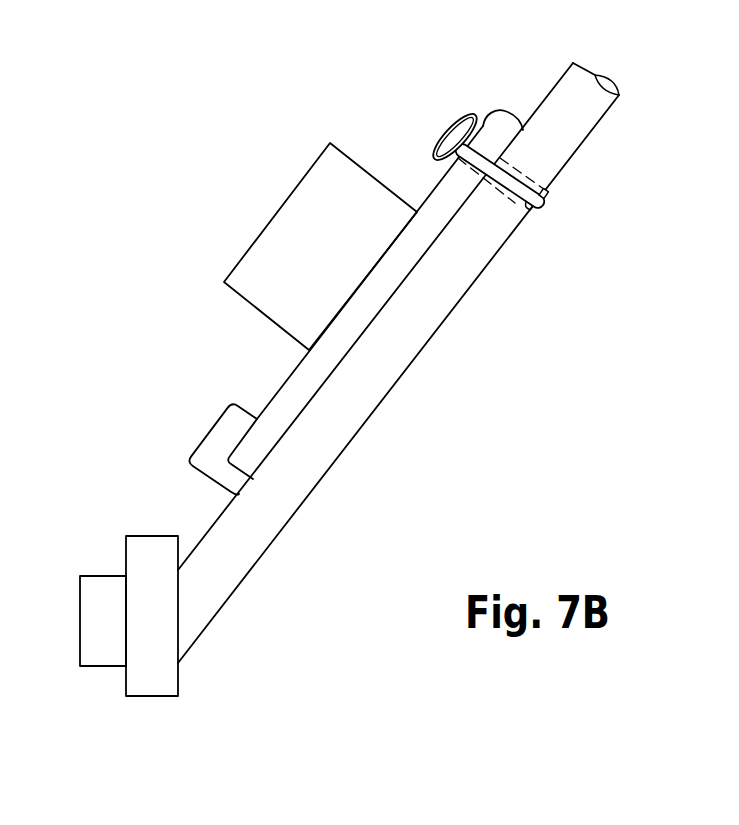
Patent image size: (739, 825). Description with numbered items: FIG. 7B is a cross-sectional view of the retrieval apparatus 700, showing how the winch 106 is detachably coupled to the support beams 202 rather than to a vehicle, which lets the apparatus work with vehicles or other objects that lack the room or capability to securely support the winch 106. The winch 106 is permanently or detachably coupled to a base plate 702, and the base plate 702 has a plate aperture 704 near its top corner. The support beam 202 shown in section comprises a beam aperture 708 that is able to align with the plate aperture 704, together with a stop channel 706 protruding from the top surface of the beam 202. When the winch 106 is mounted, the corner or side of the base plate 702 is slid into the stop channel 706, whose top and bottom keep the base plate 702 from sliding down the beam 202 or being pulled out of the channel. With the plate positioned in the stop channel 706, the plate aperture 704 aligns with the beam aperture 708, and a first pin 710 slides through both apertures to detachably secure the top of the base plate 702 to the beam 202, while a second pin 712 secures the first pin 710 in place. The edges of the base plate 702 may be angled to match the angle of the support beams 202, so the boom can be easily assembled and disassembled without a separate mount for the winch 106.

The retrieval apparatus 700 is at (79, 138).
The support beam 202 is at (247, 545).
The winch 106 is at (338, 247).
The base plate 702 is at (295, 387).
The plate aperture 704 is at (491, 117).
The stop channel 706 is at (203, 460).
The beam aperture 708 is at (532, 168).
The first pin 710 is at (441, 121).
The second pin 712 is at (531, 220).